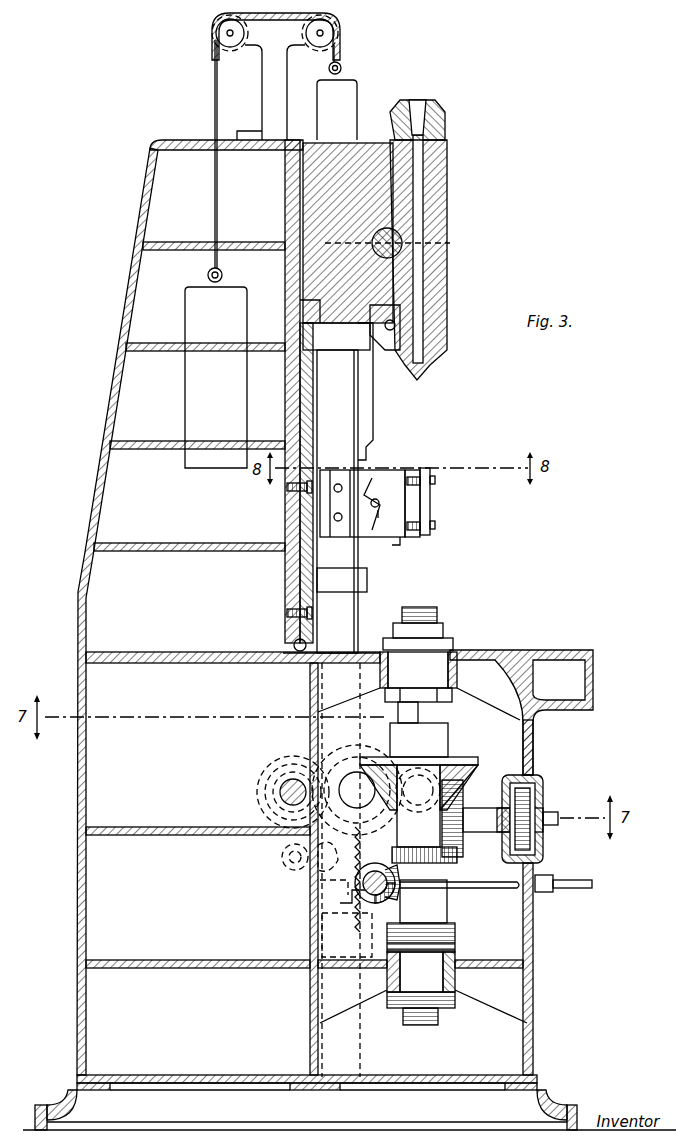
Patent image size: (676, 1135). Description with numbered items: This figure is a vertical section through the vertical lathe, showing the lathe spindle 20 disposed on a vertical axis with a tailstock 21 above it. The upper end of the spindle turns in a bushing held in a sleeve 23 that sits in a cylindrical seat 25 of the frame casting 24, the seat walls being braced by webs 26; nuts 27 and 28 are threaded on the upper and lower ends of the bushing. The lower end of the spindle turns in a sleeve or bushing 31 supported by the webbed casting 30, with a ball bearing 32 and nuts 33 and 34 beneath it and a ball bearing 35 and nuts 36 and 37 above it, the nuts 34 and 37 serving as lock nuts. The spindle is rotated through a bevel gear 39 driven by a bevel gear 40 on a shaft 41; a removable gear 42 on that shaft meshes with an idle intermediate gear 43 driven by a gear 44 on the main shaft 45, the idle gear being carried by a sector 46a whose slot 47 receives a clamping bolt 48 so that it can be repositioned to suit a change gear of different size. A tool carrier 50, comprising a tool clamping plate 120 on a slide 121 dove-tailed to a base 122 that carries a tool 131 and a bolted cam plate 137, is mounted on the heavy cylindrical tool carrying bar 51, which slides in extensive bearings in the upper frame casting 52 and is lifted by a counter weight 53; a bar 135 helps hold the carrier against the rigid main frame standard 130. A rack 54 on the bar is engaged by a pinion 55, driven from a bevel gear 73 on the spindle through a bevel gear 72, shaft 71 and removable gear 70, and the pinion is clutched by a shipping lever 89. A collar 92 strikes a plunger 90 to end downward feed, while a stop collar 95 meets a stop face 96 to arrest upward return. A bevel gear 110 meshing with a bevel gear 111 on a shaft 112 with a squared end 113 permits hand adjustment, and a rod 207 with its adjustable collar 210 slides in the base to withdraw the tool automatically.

The lathe spindle 20 is at (425, 613).
The tailstock 21 is at (449, 287).
The sleeve 23 is at (455, 647).
The frame casting 24 is at (508, 655).
The cylindrical seat 25 is at (459, 678).
The webs 26 is at (507, 696).
The nut 27 is at (445, 633).
The nut 28 is at (447, 701).
The webbed casting 30 is at (456, 961).
The sleeve or bushing 31 is at (410, 978).
The ball bearing 32 is at (462, 996).
The nut 33 is at (455, 1003).
The lock nut 34 is at (450, 1016).
The ball bearing 35 is at (456, 950).
The nut 36 is at (456, 943).
The lock nut 37 is at (444, 925).
The bevel gear 39 is at (470, 761).
The bevel gear 40 is at (480, 776).
The shaft 41 is at (403, 815).
The gear 42 is at (430, 758).
The idle intermediate gear 43 is at (357, 785).
The gear 44 is at (268, 766).
The main shaft 45 is at (280, 792).
The sector 46a is at (282, 853).
The slot 47 is at (318, 868).
The clamping bolt 48 is at (288, 859).
The tool carrier 50 is at (352, 492).
The tool carrying bar 51 is at (335, 398).
The upper frame casting 52 is at (360, 147).
The counter weight 53 is at (184, 398).
The rack 54 is at (345, 879).
The pinion 55 is at (362, 890).
The gear 70 is at (530, 797).
The shaft 71 is at (500, 824).
The bevel gear 72 is at (464, 787).
The bevel gear 73 is at (458, 862).
The shipping lever 89 is at (590, 882).
The plunger 90 is at (363, 641).
The collar 92 is at (368, 579).
The stop collar 95 is at (345, 346).
The stop face 96 is at (321, 312).
The bevel gear 110 is at (383, 917).
The bevel gear 111 is at (404, 890).
The shaft 112 is at (518, 889).
The squared end 113 is at (565, 892).
The tool clamping plate 120 is at (433, 499).
The slide 121 is at (395, 480).
The base 122 is at (378, 516).
The main frame standard 130 is at (104, 424).
The tool 131 is at (415, 533).
The bar 135 is at (312, 576).
The cam plate 137 is at (326, 494).
The rod 207 is at (375, 417).
The adjustable collar 210 is at (364, 336).